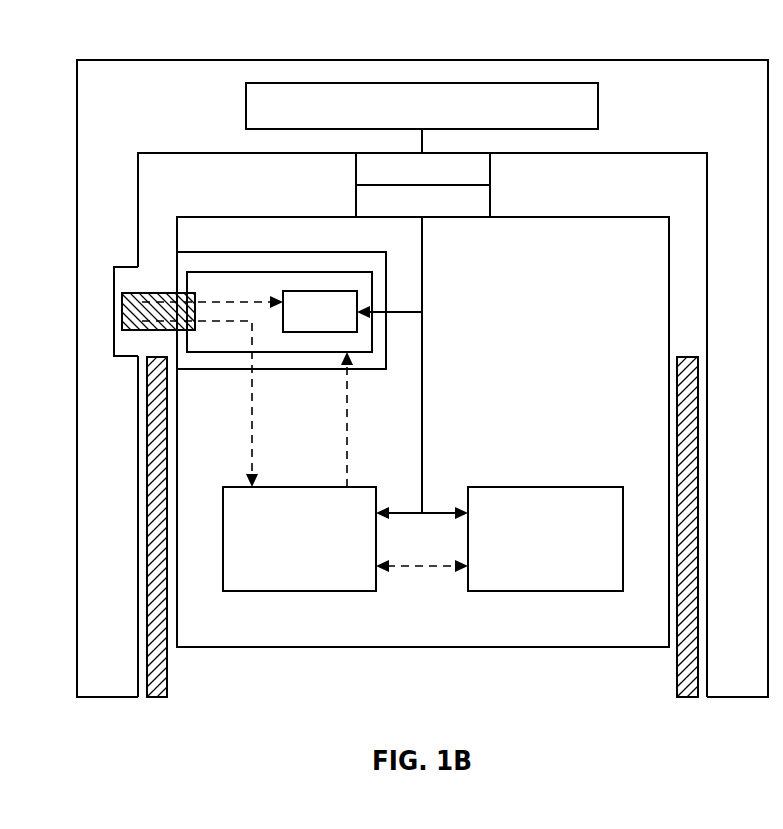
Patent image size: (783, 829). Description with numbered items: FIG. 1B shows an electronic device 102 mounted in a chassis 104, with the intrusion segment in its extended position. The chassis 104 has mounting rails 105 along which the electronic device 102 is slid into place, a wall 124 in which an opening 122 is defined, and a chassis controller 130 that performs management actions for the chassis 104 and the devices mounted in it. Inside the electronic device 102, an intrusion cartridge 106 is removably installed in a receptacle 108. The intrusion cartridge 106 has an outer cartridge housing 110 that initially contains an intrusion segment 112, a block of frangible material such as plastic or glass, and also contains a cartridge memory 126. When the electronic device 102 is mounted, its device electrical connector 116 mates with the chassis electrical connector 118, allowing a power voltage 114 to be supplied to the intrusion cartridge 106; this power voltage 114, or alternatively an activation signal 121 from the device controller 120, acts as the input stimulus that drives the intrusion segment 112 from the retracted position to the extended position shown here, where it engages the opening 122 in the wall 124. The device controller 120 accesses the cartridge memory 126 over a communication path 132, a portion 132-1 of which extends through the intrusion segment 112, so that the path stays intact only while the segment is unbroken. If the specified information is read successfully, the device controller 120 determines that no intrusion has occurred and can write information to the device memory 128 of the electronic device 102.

The electronic device 102 is at (599, 647).
The chassis 104 is at (147, 58).
The mounting rail 105 is at (157, 697).
The intrusion cartridge 106 is at (238, 260).
The receptacle 108 is at (322, 252).
The outer cartridge housing 110 is at (278, 352).
The intrusion segment 112 is at (130, 332).
The power voltage 114 is at (422, 293).
The device electrical connector 116 is at (356, 202).
The chassis electrical connector 118 is at (490, 165).
The device controller 120 is at (293, 591).
The activation signal 121 is at (345, 405).
The opening 122 is at (114, 280).
The wall 124 is at (138, 215).
The cartridge memory 126 is at (357, 312).
The device memory 128 is at (548, 591).
The chassis controller 130 is at (598, 107).
The communication path 132 is at (250, 398).
The portion of the communication path 132-1 is at (137, 310).